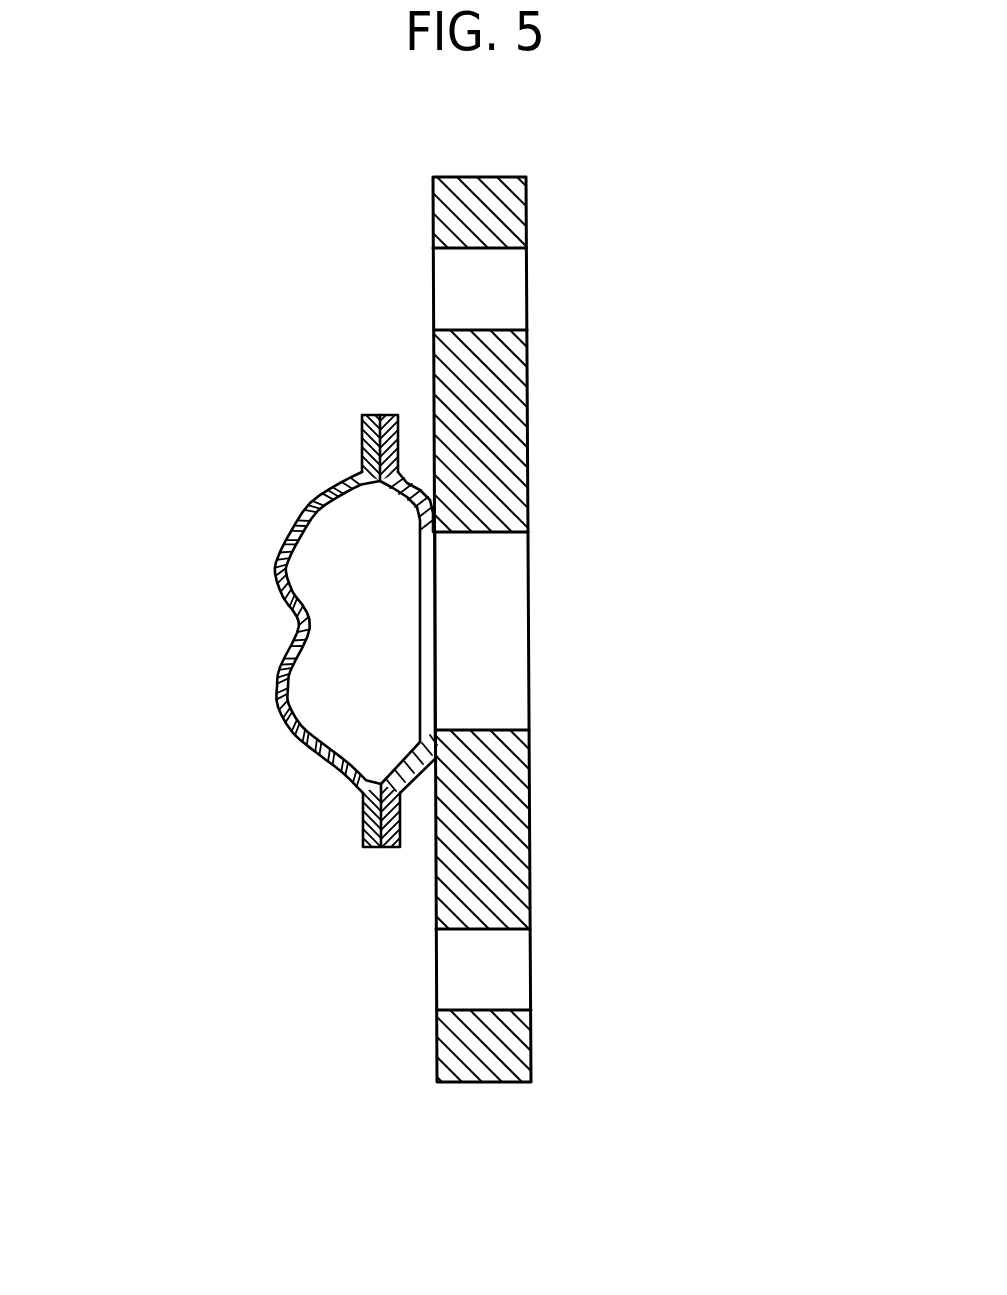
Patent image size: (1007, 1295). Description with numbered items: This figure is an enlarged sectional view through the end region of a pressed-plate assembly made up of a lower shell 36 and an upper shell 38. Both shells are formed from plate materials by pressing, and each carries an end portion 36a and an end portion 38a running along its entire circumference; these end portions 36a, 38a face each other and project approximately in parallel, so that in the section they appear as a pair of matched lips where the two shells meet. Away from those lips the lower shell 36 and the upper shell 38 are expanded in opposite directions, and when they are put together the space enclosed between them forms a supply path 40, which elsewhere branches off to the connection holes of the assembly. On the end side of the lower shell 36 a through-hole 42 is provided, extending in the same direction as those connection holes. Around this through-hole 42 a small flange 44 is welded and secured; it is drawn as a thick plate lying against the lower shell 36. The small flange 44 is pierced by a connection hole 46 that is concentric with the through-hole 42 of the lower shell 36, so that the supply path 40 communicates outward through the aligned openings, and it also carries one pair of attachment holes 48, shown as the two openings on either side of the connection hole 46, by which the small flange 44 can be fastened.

The lower shell 36 is at (405, 487).
The end portion 36a is at (398, 440).
The upper shell 38 is at (280, 543).
The end portion 38a is at (362, 440).
The supply path 40 is at (333, 673).
The through-hole 42 is at (432, 730).
The small flange 44 is at (497, 213).
The connection hole 46 is at (470, 533).
The attachment holes 48 is at (480, 248).